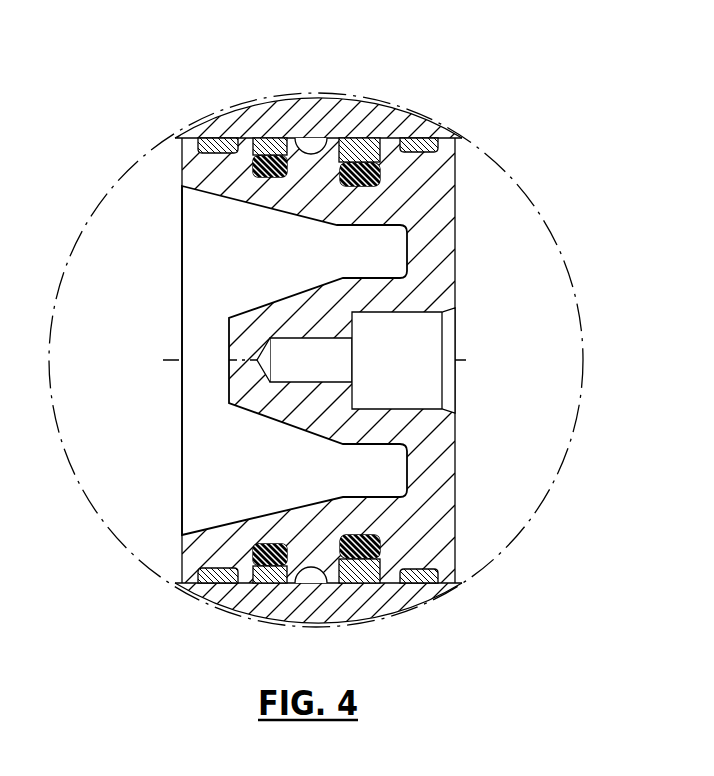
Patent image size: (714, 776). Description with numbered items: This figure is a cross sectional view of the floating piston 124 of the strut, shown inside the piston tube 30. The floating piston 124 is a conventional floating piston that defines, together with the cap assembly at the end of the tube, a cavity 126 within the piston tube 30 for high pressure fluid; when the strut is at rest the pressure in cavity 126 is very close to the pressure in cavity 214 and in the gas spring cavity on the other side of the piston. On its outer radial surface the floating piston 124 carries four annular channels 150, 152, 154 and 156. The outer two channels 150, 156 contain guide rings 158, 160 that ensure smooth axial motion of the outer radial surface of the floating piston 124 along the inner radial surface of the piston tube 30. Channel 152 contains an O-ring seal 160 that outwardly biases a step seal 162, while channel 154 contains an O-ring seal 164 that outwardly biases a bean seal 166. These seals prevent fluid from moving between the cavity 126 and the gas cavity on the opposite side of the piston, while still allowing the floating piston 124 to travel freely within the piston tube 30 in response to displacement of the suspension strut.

The piston tube 30 is at (320, 110).
The floating piston 124 is at (470, 186).
The cavity 126 is at (483, 446).
The annular channel 150 is at (180, 138).
The annular channel 152 is at (353, 138).
The annular channel 154 is at (283, 180).
The annular channel 156 is at (463, 143).
The guide ring 158 is at (220, 137).
The O-ring seal 160 is at (417, 138).
The step seal 162 is at (343, 138).
The O-ring seal 164 is at (262, 174).
The bean seal 166 is at (270, 137).
The cavity 214 is at (83, 414).